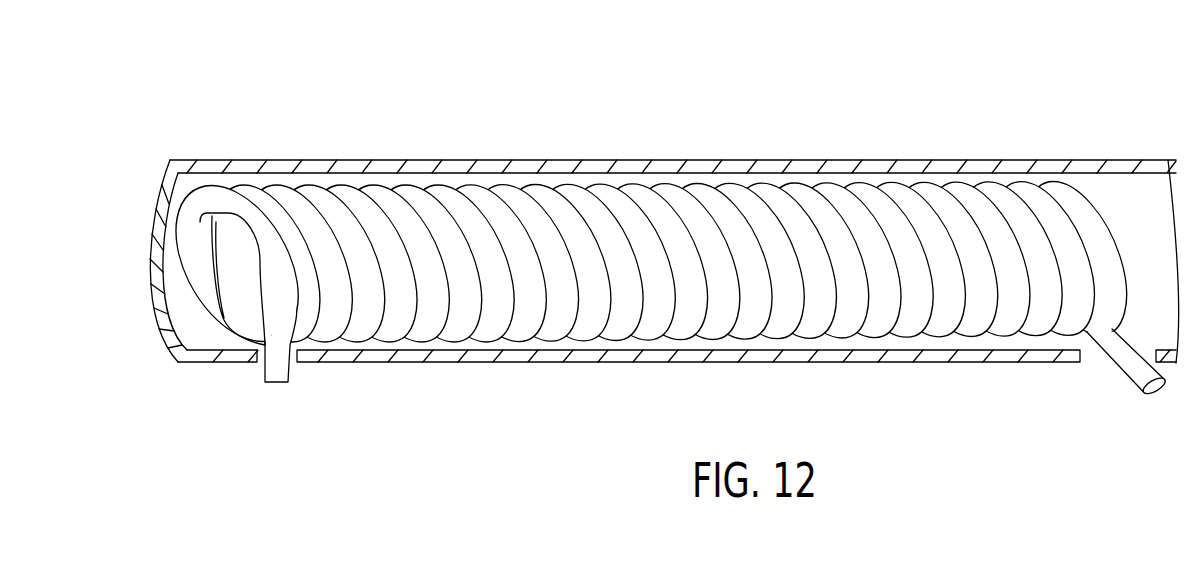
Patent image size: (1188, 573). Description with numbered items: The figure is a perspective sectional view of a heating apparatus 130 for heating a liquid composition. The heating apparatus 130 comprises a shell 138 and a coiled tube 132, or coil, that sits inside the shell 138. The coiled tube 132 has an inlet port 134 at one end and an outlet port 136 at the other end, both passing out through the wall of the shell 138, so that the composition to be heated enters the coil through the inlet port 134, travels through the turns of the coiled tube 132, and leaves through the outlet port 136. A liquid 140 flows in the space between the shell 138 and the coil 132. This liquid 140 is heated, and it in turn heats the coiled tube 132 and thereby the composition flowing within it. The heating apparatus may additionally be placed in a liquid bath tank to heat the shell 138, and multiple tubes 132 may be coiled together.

The heating apparatus 130 is at (668, 246).
The coiled tube 132 is at (541, 196).
The inlet port 134 is at (279, 386).
The outlet port 136 is at (1157, 395).
The shell 138 is at (804, 169).
The liquid 140 is at (523, 347).